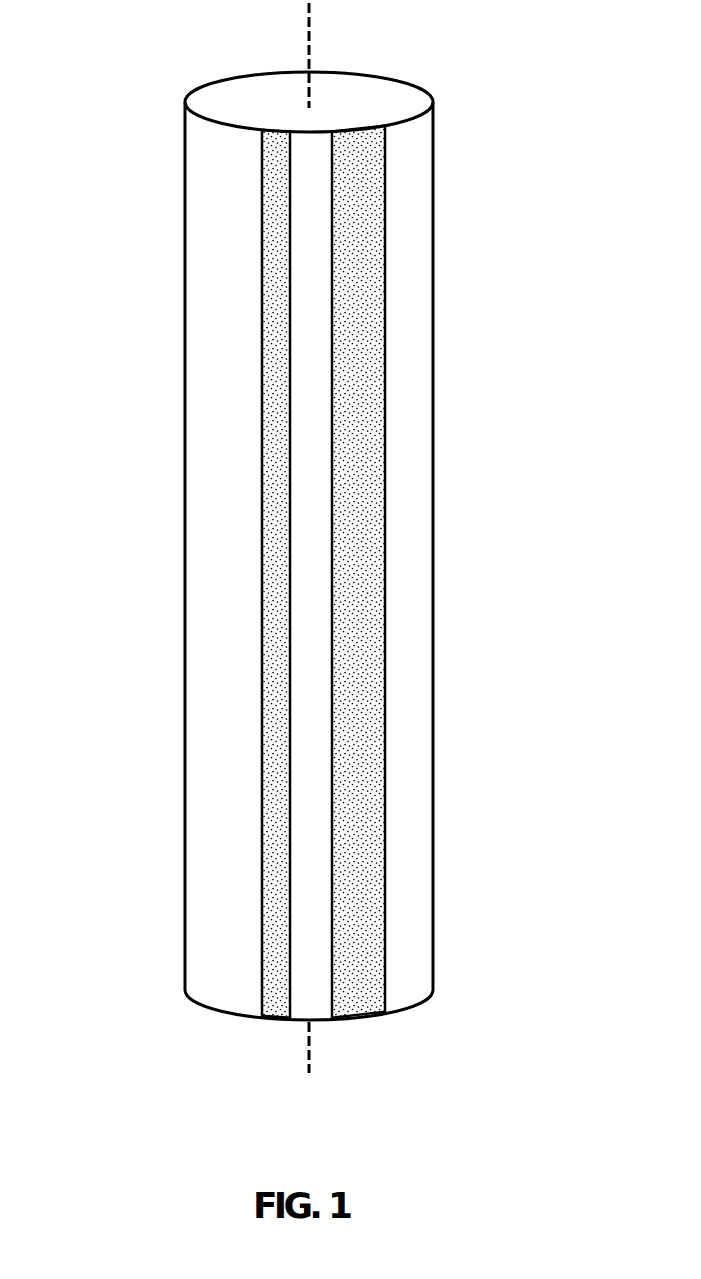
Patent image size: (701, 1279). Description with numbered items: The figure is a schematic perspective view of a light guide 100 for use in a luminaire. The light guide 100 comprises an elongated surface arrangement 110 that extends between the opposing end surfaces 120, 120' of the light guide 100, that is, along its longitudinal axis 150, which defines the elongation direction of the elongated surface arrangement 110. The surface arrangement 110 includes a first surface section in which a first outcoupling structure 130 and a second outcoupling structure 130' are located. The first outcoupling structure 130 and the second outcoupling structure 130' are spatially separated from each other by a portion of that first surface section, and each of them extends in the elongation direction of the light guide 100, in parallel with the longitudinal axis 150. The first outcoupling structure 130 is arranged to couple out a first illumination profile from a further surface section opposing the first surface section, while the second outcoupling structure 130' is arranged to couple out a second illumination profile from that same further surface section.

The light guide 100 is at (320, 583).
The elongated surface arrangement 110 is at (422, 613).
The end surface 120 is at (345, 73).
The end surface 120' is at (356, 1016).
The first outcoupling structure 130 is at (443, 572).
The second outcoupling structure 130' is at (181, 574).
The longitudinal axis 150 is at (310, 43).